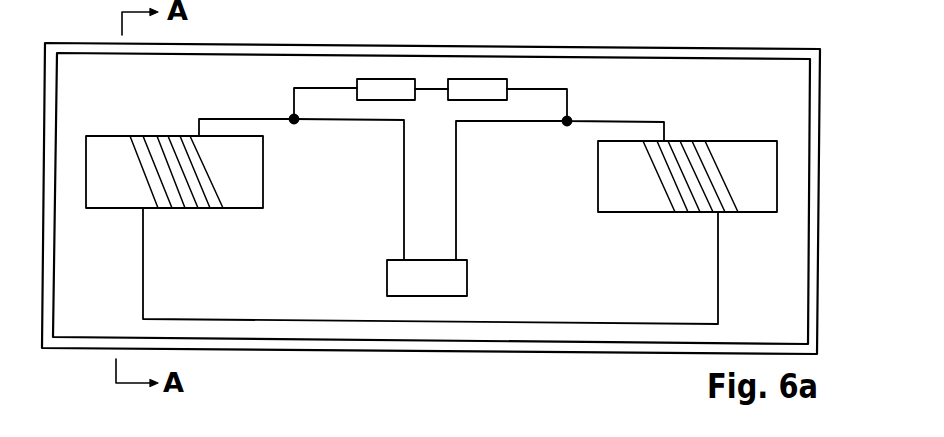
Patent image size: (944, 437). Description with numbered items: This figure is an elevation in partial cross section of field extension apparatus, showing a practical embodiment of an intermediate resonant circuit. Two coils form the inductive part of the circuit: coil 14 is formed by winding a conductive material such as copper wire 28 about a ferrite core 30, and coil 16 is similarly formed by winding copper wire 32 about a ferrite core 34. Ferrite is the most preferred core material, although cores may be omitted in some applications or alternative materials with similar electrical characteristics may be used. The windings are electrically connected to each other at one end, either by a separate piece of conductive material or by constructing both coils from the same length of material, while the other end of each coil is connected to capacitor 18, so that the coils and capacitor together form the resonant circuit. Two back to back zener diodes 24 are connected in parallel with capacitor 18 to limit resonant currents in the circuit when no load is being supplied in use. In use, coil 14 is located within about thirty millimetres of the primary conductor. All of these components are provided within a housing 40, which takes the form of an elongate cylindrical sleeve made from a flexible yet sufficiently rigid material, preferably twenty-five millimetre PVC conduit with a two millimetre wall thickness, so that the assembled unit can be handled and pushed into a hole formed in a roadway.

The coil 14 is at (174, 177).
The coil 16 is at (672, 179).
The capacitor 18 is at (427, 278).
The back to back zener diodes 24 is at (385, 87).
The copper wire 28 is at (170, 155).
The ferrite core 30 is at (116, 185).
The copper wire 32 is at (672, 162).
The ferrite core 34 is at (747, 160).
The housing 40 is at (450, 352).